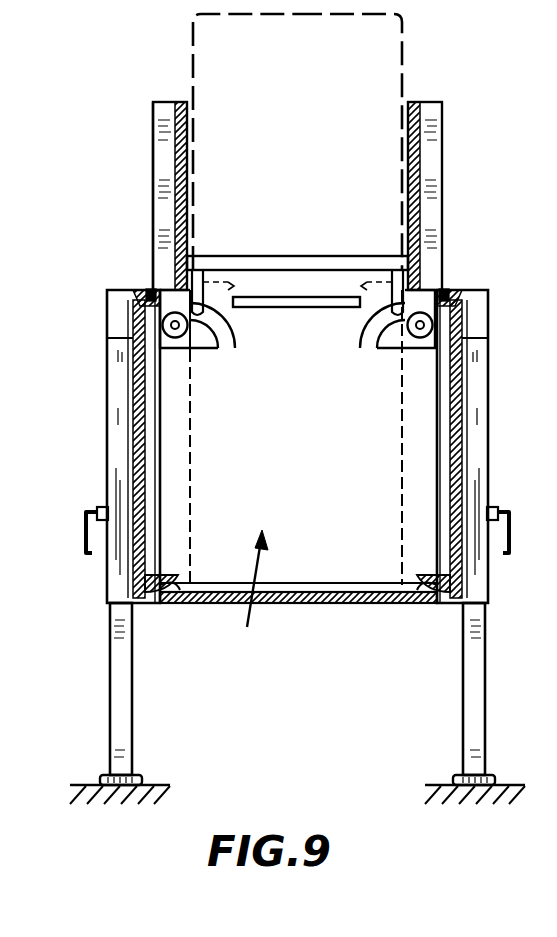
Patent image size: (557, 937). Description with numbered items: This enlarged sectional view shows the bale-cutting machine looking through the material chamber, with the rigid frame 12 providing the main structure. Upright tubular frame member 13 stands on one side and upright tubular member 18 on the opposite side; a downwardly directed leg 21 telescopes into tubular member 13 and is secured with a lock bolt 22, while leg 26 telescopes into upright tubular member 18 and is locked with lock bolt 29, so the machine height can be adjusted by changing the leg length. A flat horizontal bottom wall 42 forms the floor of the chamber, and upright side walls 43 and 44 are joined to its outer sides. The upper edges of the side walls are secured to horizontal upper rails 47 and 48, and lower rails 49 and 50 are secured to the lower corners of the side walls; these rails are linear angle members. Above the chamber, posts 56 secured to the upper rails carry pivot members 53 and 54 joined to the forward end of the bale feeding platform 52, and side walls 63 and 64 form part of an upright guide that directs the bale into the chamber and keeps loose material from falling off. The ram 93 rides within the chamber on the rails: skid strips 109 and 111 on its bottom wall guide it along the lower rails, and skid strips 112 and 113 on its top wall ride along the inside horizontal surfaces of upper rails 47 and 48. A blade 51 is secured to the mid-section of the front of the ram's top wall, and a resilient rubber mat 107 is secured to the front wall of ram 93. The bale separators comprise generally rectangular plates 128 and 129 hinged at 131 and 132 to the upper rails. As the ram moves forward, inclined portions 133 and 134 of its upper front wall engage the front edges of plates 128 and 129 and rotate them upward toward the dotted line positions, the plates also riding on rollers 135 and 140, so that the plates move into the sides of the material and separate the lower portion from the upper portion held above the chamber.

The frame 12 is at (551, 413).
The upright tubular frame member 13 is at (112, 436).
The upright tubular member 18 is at (480, 454).
The leg 21 is at (106, 681).
The lock bolt 22 is at (84, 538).
The leg 26 is at (484, 681).
The lock bolt 29 is at (511, 538).
The bottom wall 42 is at (318, 603).
The side wall 43 is at (466, 382).
The side wall 44 is at (128, 382).
The upper rail 47 is at (447, 296).
The upper rail 48 is at (148, 296).
The lower rail 49 is at (497, 582).
The lower rail 50 is at (100, 586).
The blade 51 is at (318, 307).
The bale feeding platform 52 is at (297, 256).
The pivot member 53 is at (152, 262).
The pivot member 54 is at (442, 118).
The post 56 is at (153, 118).
The side wall 63 is at (194, 124).
The side wall 64 is at (402, 124).
The ram 93 is at (248, 595).
The rubber mat 107 is at (318, 446).
The skid strip 109 is at (183, 593).
The skid strip 111 is at (410, 600).
The skid strip 112 is at (445, 288).
The skid strip 113 is at (150, 288).
The bale separator plate 128 is at (237, 270).
The bale separator plate 129 is at (360, 270).
The hinge 131 is at (197, 270).
The hinge 132 is at (398, 270).
The inclined portion 133 is at (162, 327).
The inclined portion 134 is at (433, 327).
The roller 135 is at (212, 352).
The roller 140 is at (380, 352).